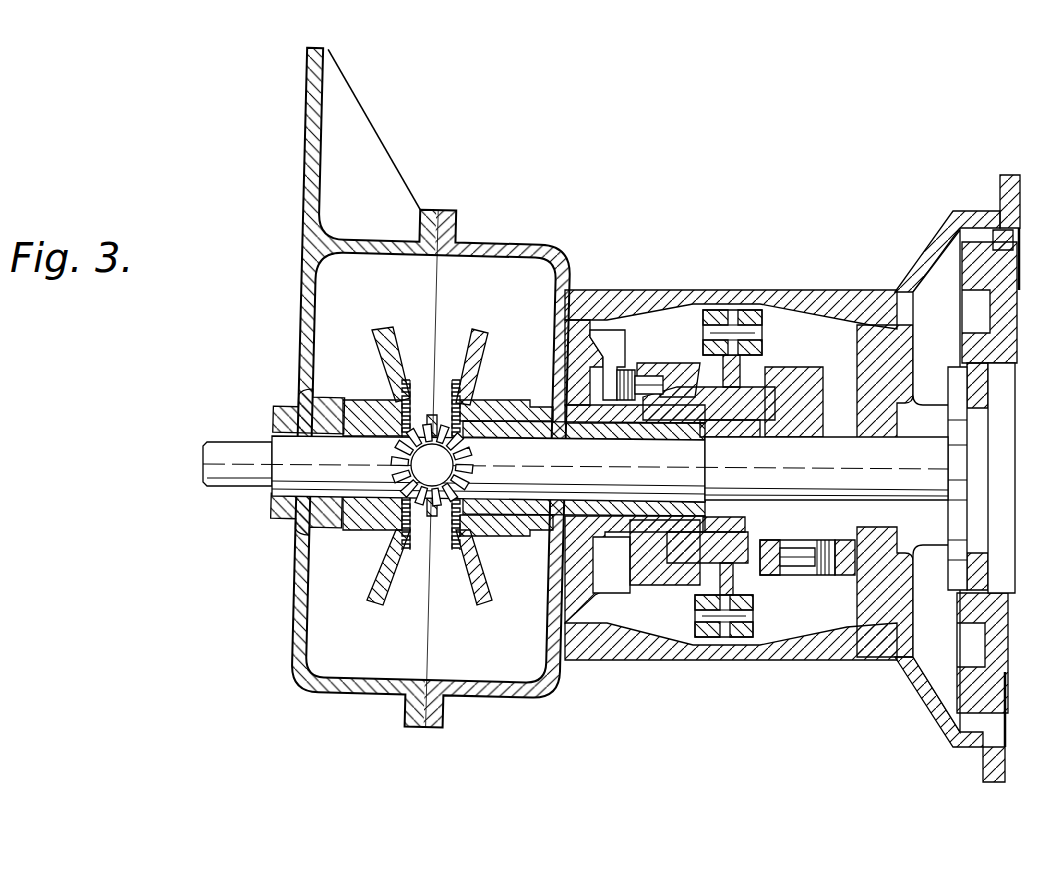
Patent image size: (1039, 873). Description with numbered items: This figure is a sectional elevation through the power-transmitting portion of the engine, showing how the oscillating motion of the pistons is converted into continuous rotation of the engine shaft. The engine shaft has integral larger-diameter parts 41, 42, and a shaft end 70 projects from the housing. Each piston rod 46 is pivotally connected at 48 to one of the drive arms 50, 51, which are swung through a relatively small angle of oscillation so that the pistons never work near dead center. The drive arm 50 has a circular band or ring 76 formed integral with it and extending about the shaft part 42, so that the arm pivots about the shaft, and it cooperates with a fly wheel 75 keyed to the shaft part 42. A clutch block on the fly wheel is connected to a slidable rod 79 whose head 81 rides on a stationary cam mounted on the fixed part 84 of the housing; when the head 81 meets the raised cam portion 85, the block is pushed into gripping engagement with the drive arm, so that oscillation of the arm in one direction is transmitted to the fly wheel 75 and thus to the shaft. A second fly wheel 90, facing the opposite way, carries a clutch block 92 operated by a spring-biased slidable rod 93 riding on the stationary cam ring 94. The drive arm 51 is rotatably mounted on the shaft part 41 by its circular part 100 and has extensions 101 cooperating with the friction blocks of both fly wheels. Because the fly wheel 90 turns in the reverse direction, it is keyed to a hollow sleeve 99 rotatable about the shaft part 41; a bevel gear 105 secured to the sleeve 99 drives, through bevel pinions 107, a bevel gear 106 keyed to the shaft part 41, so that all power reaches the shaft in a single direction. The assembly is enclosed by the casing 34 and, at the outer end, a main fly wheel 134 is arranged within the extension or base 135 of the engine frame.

The casing 34 is at (855, 290).
The shaft part 41 is at (565, 458).
The shaft part 42 is at (905, 460).
The piston rod 46 is at (745, 309).
The pivotal connection 48 is at (763, 330).
The drive arm 50 is at (690, 585).
The drive arm 51 is at (742, 370).
The shaft end 70 is at (207, 444).
The fly wheel 75 is at (818, 368).
The circular band or ring 76 is at (758, 438).
The slidable rod 79 is at (803, 576).
The head 81 is at (840, 576).
The fixed part of the engine housing 84 is at (900, 590).
The raised cam portion 85 is at (900, 375).
The fly wheel 90 is at (620, 570).
The clutch block 92 is at (690, 330).
The slidable rod 93 is at (655, 370).
The stationary cam ring 94 is at (592, 345).
The hollow shaft or sleeve 99 is at (590, 432).
The circular part 100 is at (710, 440).
The extension 101 is at (762, 422).
The bevel gear 105 is at (472, 330).
The bevel gear 106 is at (385, 596).
The bevel pinion 107 is at (430, 512).
The main fly wheel 134 is at (950, 695).
The extension or base 135 is at (935, 230).